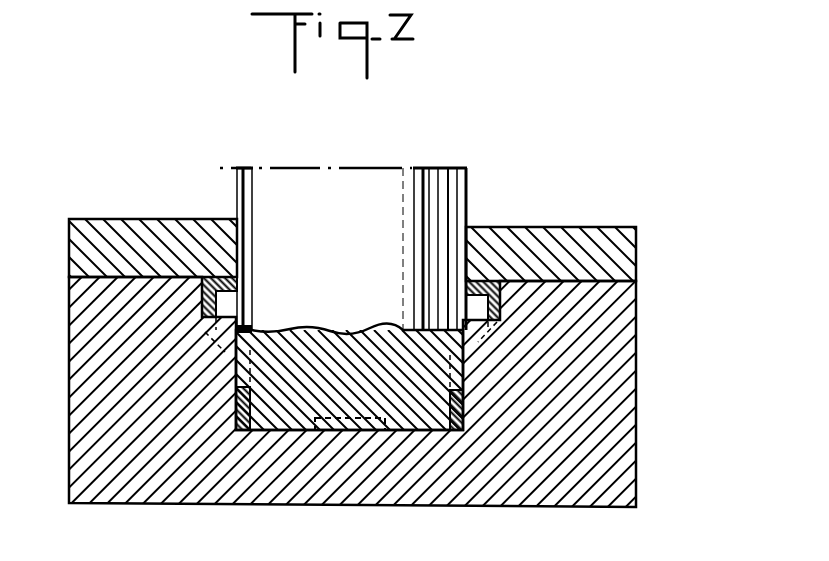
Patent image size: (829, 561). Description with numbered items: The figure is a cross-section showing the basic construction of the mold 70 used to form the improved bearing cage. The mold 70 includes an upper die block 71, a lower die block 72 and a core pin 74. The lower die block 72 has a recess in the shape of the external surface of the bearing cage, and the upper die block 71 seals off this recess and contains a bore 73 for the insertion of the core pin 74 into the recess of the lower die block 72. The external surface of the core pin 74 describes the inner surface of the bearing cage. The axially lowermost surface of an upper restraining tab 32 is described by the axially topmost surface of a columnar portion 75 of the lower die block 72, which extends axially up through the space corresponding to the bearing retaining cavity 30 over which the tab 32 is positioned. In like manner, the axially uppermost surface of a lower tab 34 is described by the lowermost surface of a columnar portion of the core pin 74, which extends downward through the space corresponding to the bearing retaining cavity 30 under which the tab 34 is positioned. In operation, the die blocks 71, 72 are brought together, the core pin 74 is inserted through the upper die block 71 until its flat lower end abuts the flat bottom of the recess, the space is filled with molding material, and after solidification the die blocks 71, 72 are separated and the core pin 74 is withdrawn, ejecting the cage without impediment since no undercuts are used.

The mold 70 is at (659, 334).
The upper die block 71 is at (636, 254).
The lower die block 72 is at (636, 437).
The bearing retaining cavity 30 is at (488, 347).
The upper restraining tab 32 is at (217, 277).
The lower tab 34 is at (346, 430).
The bore 73 is at (380, 249).
The core pin 74 is at (467, 190).
The columnar portion 75 is at (238, 311).